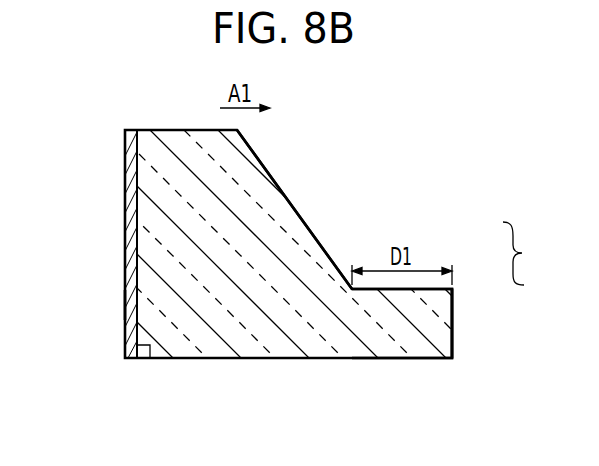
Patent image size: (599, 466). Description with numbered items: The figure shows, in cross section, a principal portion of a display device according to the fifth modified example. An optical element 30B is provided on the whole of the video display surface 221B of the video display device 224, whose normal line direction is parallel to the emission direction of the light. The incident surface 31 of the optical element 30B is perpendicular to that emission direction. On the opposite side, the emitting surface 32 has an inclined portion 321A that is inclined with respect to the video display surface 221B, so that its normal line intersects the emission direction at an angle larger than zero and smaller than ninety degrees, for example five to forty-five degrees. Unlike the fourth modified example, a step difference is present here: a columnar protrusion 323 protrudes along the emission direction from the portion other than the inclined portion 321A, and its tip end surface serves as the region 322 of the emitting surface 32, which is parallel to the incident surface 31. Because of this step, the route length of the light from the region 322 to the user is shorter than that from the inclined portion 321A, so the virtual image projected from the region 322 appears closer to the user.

The optical element 30B is at (296, 369).
The incident surface 31 is at (135, 200).
The video display device 224 is at (114, 302).
The video display surface 221B is at (150, 347).
The protrusion 323 is at (403, 328).
The inclined portion 321A is at (292, 205).
The region 322 is at (452, 308).
The emitting surface 32 is at (527, 253).